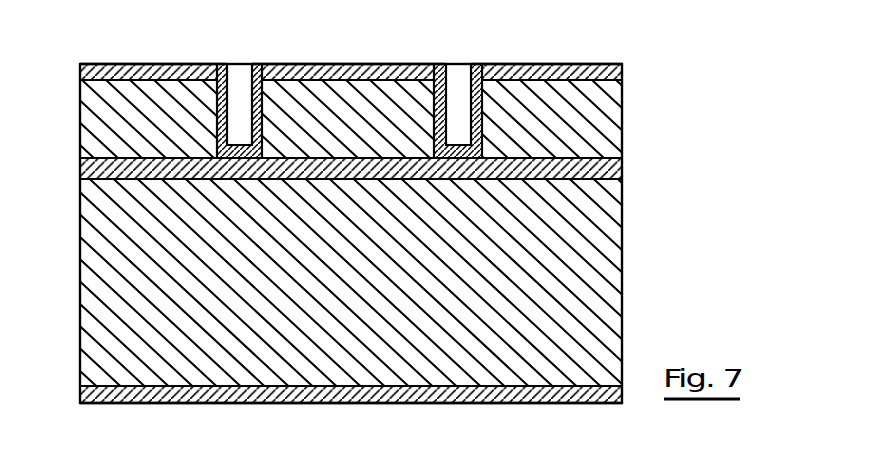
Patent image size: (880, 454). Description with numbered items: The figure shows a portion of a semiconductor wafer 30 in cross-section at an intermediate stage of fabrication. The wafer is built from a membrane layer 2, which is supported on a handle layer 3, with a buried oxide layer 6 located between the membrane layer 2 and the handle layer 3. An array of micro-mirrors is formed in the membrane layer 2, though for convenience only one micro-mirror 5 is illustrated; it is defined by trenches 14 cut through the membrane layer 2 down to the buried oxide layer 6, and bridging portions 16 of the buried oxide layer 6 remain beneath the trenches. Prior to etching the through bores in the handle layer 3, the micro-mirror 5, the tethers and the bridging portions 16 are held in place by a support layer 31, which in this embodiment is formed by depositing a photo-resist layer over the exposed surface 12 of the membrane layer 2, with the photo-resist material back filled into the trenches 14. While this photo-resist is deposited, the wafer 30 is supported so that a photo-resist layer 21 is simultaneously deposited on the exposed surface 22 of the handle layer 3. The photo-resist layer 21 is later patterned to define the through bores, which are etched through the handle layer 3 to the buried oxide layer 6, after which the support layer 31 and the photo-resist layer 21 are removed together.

The membrane layer 2 is at (372, 86).
The handle layer 3 is at (603, 273).
The micro-mirror 5 is at (346, 93).
The buried oxide layer 6 is at (612, 172).
The exposed surface 12 is at (556, 76).
The trench 14 is at (281, 86).
The bridging portion 16 is at (239, 175).
The photo-resist layer 21 is at (535, 397).
The exposed surface 22 is at (458, 402).
The semiconductor wafer 30 is at (679, 101).
The support layer 31 is at (616, 75).